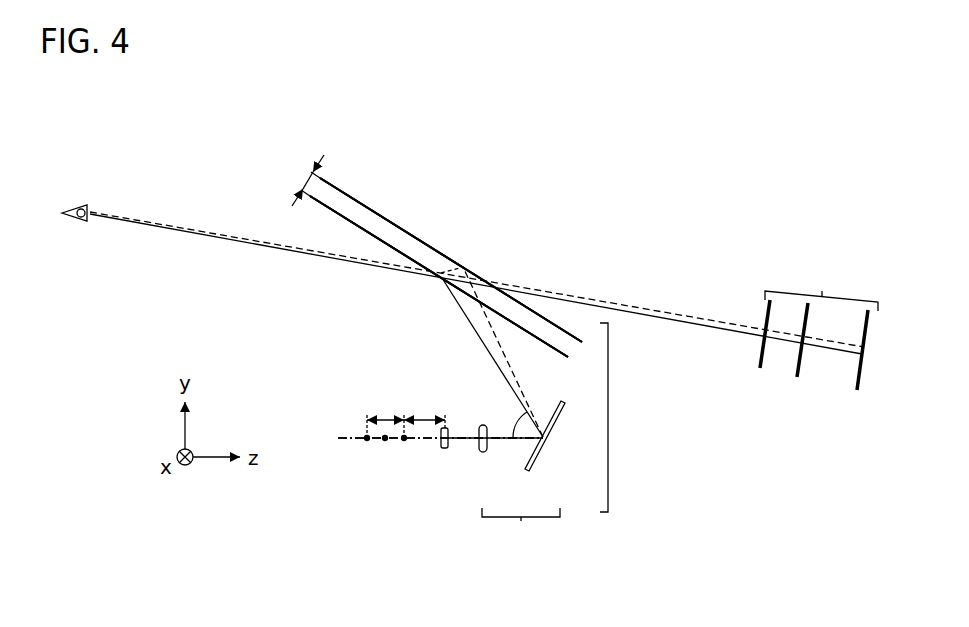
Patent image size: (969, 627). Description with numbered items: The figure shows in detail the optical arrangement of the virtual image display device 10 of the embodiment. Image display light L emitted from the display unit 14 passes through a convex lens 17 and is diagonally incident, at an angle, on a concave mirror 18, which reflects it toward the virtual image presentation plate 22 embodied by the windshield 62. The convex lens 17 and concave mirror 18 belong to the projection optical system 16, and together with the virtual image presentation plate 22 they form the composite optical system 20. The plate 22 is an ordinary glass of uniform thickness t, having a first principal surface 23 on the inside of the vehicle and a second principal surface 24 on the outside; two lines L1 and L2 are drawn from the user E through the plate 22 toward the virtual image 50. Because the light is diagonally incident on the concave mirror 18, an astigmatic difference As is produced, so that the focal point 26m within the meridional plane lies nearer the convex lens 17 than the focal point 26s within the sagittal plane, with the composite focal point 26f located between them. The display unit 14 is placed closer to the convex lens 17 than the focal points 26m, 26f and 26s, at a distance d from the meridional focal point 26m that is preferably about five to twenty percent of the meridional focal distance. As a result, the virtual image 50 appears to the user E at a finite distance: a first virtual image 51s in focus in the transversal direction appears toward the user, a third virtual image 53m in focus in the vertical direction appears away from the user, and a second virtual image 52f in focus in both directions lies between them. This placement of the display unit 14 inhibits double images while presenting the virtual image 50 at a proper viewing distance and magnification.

The virtual image display device 10 is at (406, 523).
The display unit 14 is at (445, 450).
The projection optical system 16 is at (521, 529).
The convex lens 17 is at (483, 453).
The concave mirror 18 is at (538, 455).
The composite optical system 20 is at (608, 417).
The virtual image presentation plate 22 is at (348, 173).
The windshield 62 is at (446, 267).
The first principal surface 23 is at (350, 221).
The second principal surface 24 is at (362, 203).
The focal point within the sagittal plane 26s is at (365, 439).
The composite focal point 26f is at (384, 440).
The focal point within the meridional plane 26m is at (404, 442).
The virtual image 50 is at (822, 292).
The first virtual image 51s is at (756, 376).
The second virtual image 52f is at (795, 390).
The third virtual image 53m is at (855, 398).
The user E is at (73, 204).
The image display light L is at (477, 353).
The first line of sight L1 is at (393, 270).
The second line of sight L2 is at (362, 258).
The thickness t is at (308, 180).
The astigmatic difference As is at (390, 416).
The distance d is at (427, 416).